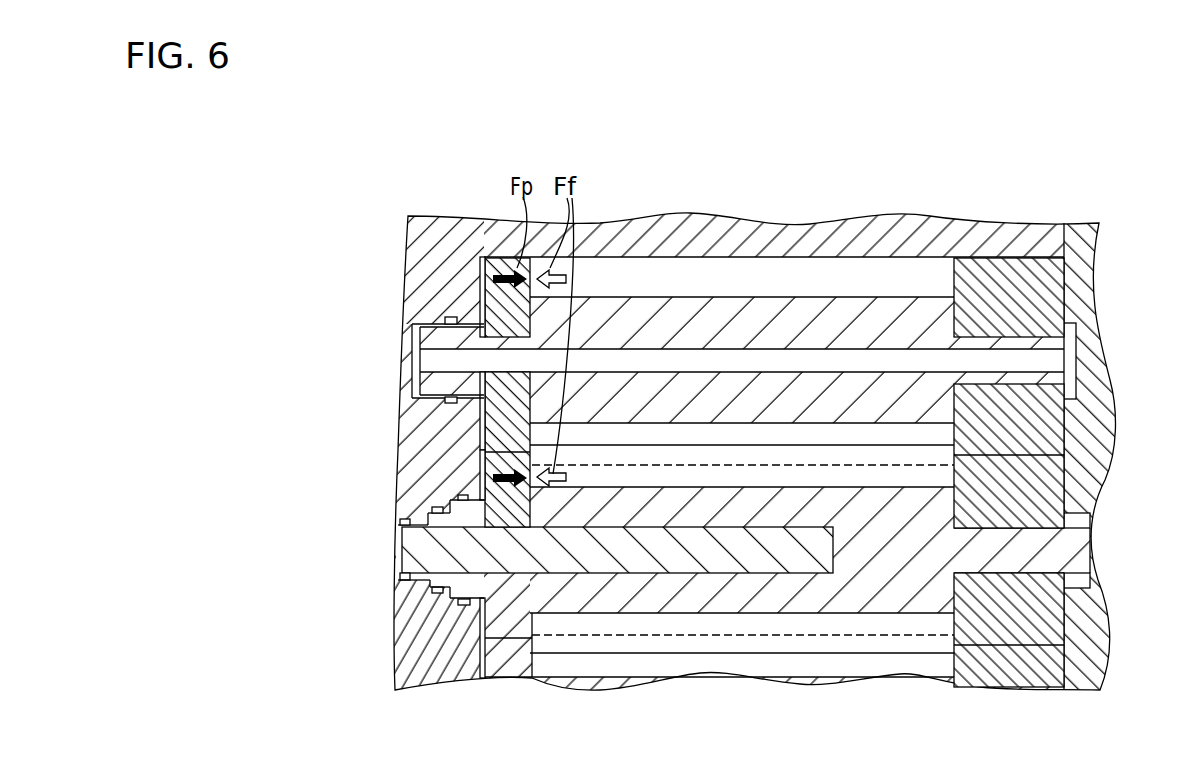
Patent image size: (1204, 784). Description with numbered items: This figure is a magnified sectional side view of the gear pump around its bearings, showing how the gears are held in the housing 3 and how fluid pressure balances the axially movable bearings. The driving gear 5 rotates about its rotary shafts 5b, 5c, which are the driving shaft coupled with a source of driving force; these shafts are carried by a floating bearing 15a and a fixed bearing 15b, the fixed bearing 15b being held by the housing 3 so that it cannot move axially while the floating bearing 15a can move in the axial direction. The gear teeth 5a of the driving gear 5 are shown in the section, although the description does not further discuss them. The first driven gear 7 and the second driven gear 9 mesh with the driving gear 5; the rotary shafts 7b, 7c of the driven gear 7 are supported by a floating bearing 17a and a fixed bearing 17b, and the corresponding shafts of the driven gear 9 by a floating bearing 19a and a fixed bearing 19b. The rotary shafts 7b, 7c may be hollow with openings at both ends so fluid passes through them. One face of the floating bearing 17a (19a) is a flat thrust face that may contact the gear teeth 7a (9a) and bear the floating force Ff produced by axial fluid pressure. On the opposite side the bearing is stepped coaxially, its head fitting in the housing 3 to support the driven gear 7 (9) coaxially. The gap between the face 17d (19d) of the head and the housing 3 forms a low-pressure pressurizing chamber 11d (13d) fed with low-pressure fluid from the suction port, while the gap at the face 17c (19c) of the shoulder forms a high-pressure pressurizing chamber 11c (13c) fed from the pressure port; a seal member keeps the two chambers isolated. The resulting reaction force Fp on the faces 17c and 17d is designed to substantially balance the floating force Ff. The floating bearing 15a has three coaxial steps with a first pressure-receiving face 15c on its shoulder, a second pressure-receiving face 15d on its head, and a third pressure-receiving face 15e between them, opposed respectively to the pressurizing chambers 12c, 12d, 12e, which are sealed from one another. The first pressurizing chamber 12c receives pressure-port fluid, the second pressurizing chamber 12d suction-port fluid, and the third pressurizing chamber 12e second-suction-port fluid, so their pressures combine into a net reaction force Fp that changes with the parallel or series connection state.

The housing 3 is at (690, 226).
The driving gear 5 is at (898, 598).
The passage of rotor 5a is at (913, 455).
The rotary shaft 5b is at (410, 555).
The rotary shaft 5c is at (1072, 546).
The first driven gear 7 is at (742, 299).
The gear teeth 7a is at (868, 404).
The rotary shaft 7b is at (440, 377).
The rotary shaft 7c is at (1047, 344).
The second driven gear 9 is at (762, 312).
The gear teeth 9a is at (850, 276).
The high-pressure pressurizing chamber 11c is at (353, 303).
The low-pressure pressurizing chamber 11d is at (361, 365).
The first pressurizing chamber 12c is at (478, 612).
The second pressurizing chamber 12d is at (398, 578).
The third pressurizing chamber 12e is at (462, 603).
The high-pressure pressurizing chamber 13c is at (448, 316).
The low-pressure pressurizing chamber 13d is at (420, 350).
The floating bearing 15a is at (502, 632).
The fixed bearing 15b is at (1050, 612).
The first pressure-receiving face 15c is at (478, 468).
The second pressure-receiving face 15d is at (402, 523).
The third pressure-receiving face 15e is at (458, 498).
The floating bearing 17a is at (523, 334).
The fixed bearing 17b is at (1019, 351).
The face of the shoulder 17c is at (375, 351).
The face of the head 17d is at (377, 357).
The floating bearing 19a is at (508, 470).
The fixed bearing 19b is at (1010, 266).
The face of the shoulder 19c is at (478, 295).
The face of the head 19d is at (412, 328).